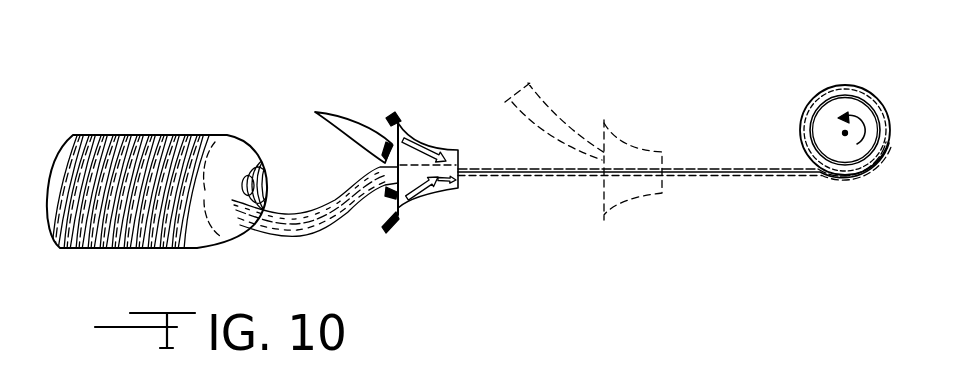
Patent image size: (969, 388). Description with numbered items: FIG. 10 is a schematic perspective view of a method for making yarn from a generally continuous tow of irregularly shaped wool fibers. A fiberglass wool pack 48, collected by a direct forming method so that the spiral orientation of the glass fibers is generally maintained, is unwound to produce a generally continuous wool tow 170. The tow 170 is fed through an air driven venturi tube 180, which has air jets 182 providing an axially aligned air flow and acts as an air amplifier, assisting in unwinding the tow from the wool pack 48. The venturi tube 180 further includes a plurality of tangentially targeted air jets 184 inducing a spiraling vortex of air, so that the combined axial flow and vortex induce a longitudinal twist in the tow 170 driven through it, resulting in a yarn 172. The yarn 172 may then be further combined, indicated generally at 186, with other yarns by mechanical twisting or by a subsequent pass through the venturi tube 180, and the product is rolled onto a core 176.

The fiberglass wool pack 48 is at (168, 150).
The generally continuous wool tow 170 is at (303, 241).
The yarn 172 is at (538, 178).
The core 176 is at (820, 90).
The air driven venturi tube 180 is at (470, 130).
The air jets 182 is at (389, 116).
The tangentially targeted air jets 184 is at (390, 286).
The combining of yarn 186 is at (616, 122).